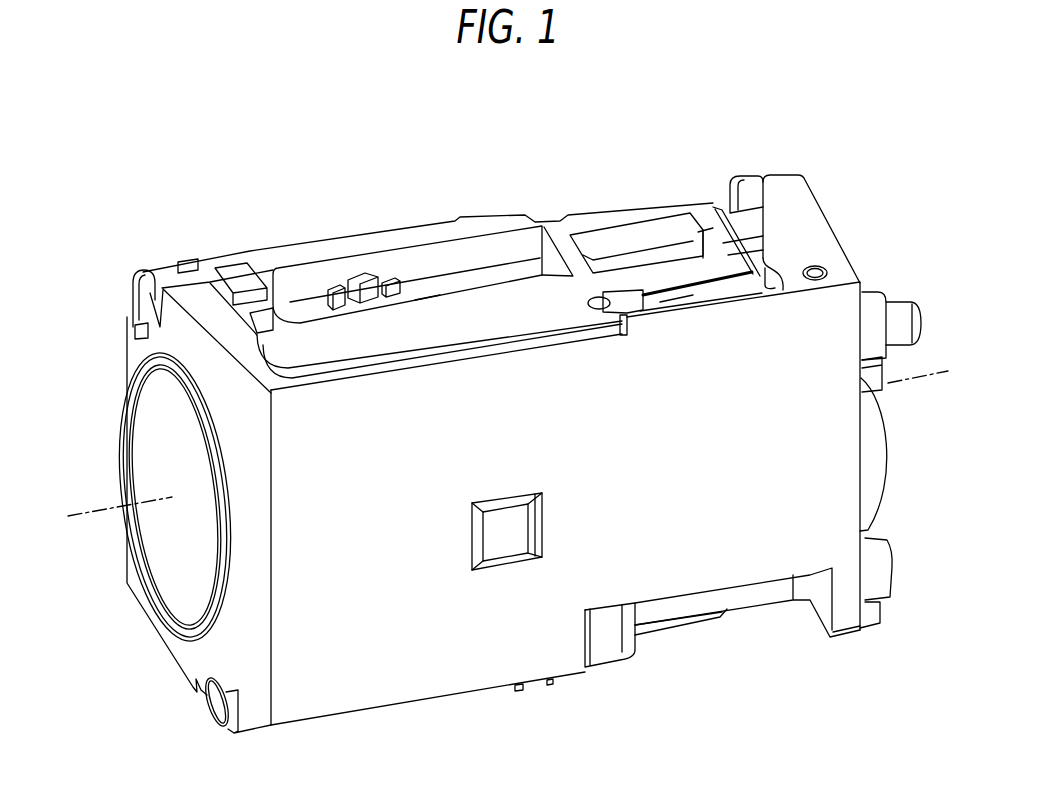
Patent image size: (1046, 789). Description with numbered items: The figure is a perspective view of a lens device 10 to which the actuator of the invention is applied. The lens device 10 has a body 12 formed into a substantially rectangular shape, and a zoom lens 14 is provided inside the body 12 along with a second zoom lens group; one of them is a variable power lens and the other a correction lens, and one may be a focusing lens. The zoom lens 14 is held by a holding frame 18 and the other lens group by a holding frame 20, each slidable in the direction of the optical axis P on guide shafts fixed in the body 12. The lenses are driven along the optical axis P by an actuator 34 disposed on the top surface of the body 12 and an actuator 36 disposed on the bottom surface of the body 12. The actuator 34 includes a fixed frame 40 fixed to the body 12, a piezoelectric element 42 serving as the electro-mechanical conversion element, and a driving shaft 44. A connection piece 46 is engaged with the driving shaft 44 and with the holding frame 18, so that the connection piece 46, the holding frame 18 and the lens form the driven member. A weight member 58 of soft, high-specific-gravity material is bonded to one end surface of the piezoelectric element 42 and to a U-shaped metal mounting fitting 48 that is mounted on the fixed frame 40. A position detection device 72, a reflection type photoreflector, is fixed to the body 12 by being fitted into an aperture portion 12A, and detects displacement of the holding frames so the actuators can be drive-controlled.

The lens device 10 is at (474, 184).
The body 12 is at (437, 686).
The aperture portion 12A is at (525, 557).
The zoom lens 14 is at (148, 468).
The holding frame 18 is at (132, 370).
The holding frame 20 is at (876, 441).
The actuator 34 is at (442, 260).
The actuator 36 is at (668, 641).
The fixed frame 40 is at (523, 238).
The piezoelectric element 42 is at (634, 263).
The driving shaft 44 is at (425, 303).
The connection piece 46 is at (330, 278).
The mounting fitting 48 is at (713, 208).
The weight member 58 is at (712, 225).
The position detection device 72 is at (506, 538).
The optical axis P is at (87, 514).